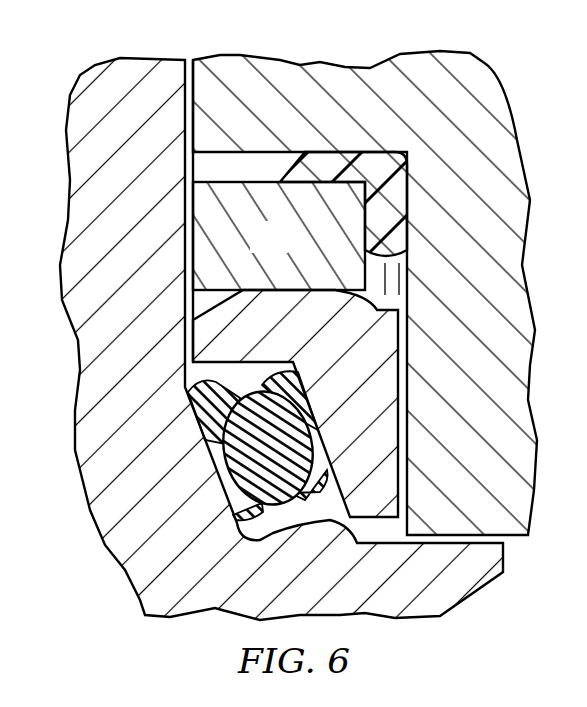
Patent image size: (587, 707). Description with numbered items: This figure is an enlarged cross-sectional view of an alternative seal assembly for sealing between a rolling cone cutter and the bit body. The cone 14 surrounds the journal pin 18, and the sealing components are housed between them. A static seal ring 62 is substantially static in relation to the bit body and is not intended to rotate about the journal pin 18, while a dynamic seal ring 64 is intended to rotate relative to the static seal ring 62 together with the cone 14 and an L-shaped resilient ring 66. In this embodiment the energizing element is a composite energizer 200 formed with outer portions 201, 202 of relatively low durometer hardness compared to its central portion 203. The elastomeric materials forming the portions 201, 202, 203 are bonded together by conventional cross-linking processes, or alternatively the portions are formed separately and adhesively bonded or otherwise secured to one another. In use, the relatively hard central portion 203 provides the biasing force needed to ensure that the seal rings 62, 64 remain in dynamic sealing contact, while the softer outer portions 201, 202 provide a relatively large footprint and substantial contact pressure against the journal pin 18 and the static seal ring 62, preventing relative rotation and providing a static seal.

The cone 14 is at (322, 58).
The journal pin 18 is at (68, 222).
The static seal ring 62 is at (403, 340).
The dynamic seal ring 64 is at (283, 250).
The L-shaped resilient ring 66 is at (405, 200).
The composite energizer 200 is at (246, 481).
The outer portion 201 is at (296, 392).
The outer portion 202 is at (200, 386).
The central portion 203 is at (245, 462).